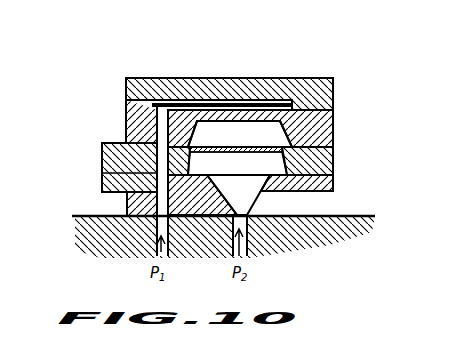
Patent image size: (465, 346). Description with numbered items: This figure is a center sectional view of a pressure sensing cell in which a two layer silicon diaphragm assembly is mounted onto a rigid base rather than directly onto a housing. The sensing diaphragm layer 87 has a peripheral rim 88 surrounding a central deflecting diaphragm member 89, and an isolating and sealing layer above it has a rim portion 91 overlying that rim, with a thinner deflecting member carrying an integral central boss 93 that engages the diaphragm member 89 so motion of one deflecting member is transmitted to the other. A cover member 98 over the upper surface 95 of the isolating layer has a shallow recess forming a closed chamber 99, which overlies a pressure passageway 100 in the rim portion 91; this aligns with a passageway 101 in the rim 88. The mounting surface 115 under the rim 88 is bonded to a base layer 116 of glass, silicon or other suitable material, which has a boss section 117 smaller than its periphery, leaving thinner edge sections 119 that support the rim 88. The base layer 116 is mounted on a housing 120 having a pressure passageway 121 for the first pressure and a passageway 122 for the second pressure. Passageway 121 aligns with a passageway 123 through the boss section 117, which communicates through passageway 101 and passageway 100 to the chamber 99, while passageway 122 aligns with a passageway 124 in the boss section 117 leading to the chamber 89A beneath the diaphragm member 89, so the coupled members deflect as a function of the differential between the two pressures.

The sensing diaphragm layer 87 is at (336, 150).
The peripheral rim 88 is at (124, 141).
The deflecting diaphragm member 89 is at (199, 140).
The chamber 89A is at (293, 146).
The rim portion 91 is at (335, 88).
The central boss 93 is at (231, 103).
The upper surface 95 is at (245, 112).
The cover member 98 is at (157, 78).
The closed chamber 99 is at (282, 102).
The pressure passageway 100 is at (152, 115).
The passageway 101 is at (133, 158).
The mounting surface 115 is at (335, 181).
The base layer 116 is at (290, 183).
The boss section 117 is at (202, 229).
The thinner edge sections 119 is at (378, 255).
The housing 120 is at (384, 235).
The pressure passageway 121 is at (158, 228).
The passageway 122 is at (258, 230).
The passageway 123 is at (133, 202).
The passageway 124 is at (258, 170).